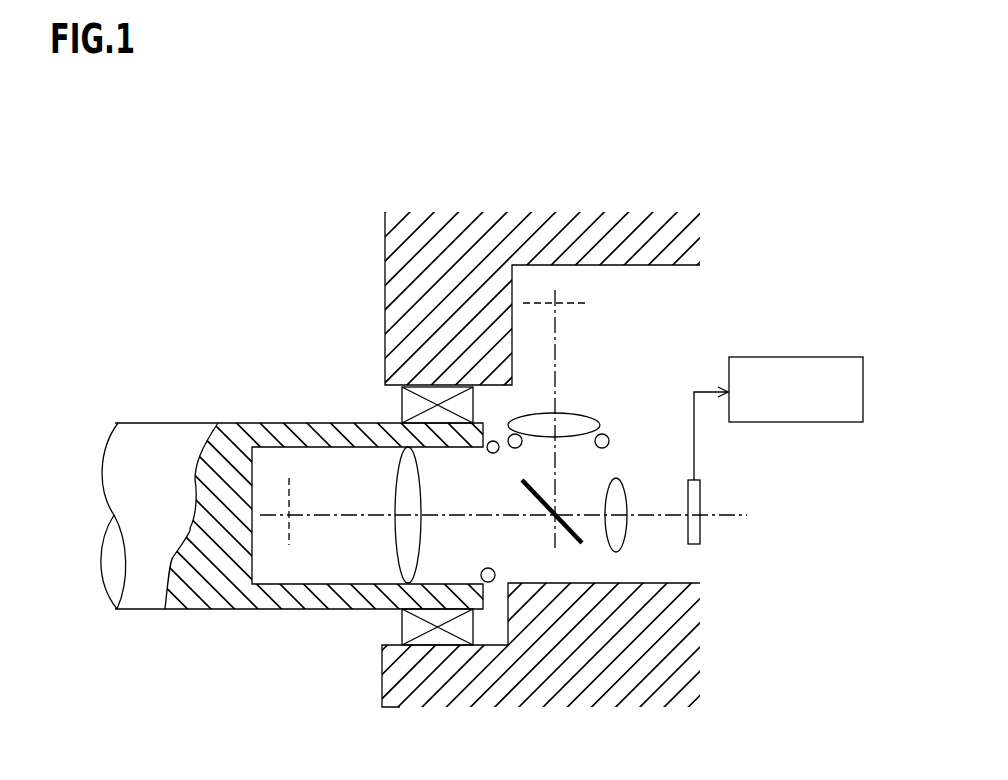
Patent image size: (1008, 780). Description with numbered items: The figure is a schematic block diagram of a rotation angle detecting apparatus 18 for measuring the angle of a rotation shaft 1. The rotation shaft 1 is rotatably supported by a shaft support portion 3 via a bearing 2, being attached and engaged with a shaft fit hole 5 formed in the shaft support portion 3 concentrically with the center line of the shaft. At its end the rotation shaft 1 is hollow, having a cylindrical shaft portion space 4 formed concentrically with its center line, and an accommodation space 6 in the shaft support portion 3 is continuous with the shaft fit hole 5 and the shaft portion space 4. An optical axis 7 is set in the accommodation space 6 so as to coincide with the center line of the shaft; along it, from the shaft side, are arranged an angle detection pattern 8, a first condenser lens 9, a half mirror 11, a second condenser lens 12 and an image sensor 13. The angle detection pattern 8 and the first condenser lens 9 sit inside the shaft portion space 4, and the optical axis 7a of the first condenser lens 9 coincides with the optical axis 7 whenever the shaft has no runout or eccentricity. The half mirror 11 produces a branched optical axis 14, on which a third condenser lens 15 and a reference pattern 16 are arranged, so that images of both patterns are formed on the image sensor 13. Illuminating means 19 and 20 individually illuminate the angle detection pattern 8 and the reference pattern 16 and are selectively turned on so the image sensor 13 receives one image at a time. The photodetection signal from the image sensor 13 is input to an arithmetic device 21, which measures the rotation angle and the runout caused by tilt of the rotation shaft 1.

The rotation shaft 1 is at (170, 421).
The bearing 2 is at (402, 407).
The shaft support portion 3 is at (452, 299).
The shaft portion space 4 is at (346, 556).
The shaft fit hole 5 is at (490, 618).
The accommodation space 6 is at (634, 380).
The optical axis 7 is at (717, 510).
The optical axis of the first condenser lens 7a is at (366, 512).
The angle detection pattern 8 is at (284, 533).
The first condenser lens 9 is at (422, 552).
The half mirror 11 is at (560, 524).
The second condenser lens 12 is at (627, 495).
The image sensor 13 is at (700, 535).
The branched optical axis 14 is at (565, 358).
The third condenser lens 15 is at (541, 412).
The reference pattern 16 is at (578, 298).
The rotation angle detecting apparatus 18 is at (342, 396).
The illuminating means 19 is at (497, 575).
The illuminating means 20 is at (612, 438).
The arithmetic device 21 is at (781, 357).